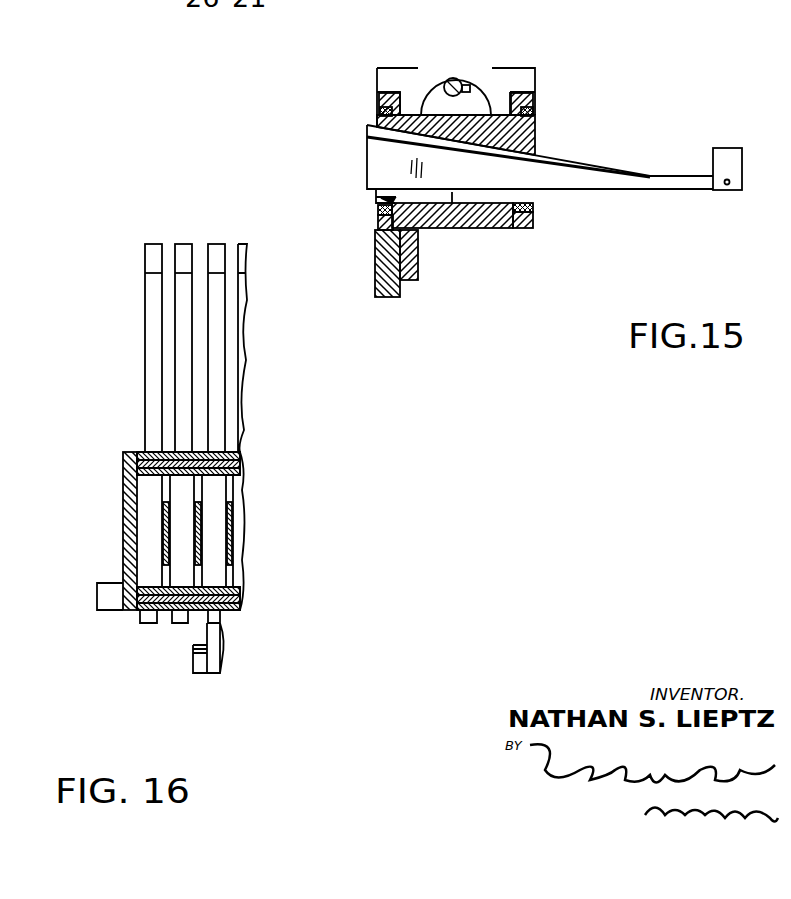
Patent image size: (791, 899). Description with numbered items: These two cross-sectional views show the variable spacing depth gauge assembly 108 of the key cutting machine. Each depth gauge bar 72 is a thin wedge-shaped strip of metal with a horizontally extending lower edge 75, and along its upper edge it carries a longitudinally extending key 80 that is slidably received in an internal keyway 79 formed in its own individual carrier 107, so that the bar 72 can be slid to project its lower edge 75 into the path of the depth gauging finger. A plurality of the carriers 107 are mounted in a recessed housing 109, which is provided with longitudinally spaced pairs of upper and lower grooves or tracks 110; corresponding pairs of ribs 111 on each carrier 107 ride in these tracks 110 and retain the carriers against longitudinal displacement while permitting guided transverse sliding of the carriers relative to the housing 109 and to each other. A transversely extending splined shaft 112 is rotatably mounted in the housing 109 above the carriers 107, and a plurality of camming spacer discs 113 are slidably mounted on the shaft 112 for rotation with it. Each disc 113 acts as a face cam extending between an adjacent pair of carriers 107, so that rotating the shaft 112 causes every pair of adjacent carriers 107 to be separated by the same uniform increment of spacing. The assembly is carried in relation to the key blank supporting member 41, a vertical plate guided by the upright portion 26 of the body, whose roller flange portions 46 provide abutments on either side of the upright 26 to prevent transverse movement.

In FIG. 16, the upright portion 26 is at (225, 641).
In FIG. 15, the key blank supporting member 41 is at (393, 294).
In FIG. 16, the key blank supporting member 41 is at (97, 596).
In FIG. 16, the flange portions 46 is at (197, 666).
In FIG. 15, the depth gauge bar 72 is at (380, 160).
In FIG. 16, the depth gauge bar 72 is at (176, 622).
In FIG. 15, the lower edge 75 is at (452, 192).
In FIG. 15, the keyway 79 is at (390, 128).
In FIG. 15, the key 80 is at (573, 163).
In FIG. 15, the carrier 107 is at (385, 198).
In FIG. 16, the carrier 107 is at (147, 486).
In FIG. 15, the variable spacing depth gauge assembly 108 is at (520, 70).
In FIG. 15, the recessed housing 109 is at (400, 72).
In FIG. 16, the recessed housing 109 is at (125, 513).
In FIG. 15, the grooves or tracks 110 is at (383, 97).
In FIG. 16, the grooves or tracks 110 is at (240, 456).
In FIG. 15, the ribs 111 is at (385, 111).
In FIG. 16, the ribs 111 is at (125, 463).
In FIG. 15, the splined shaft 112 is at (458, 82).
In FIG. 15, the camming spacer disc 113 is at (445, 56).
In FIG. 16, the camming spacer disc 113 is at (160, 534).